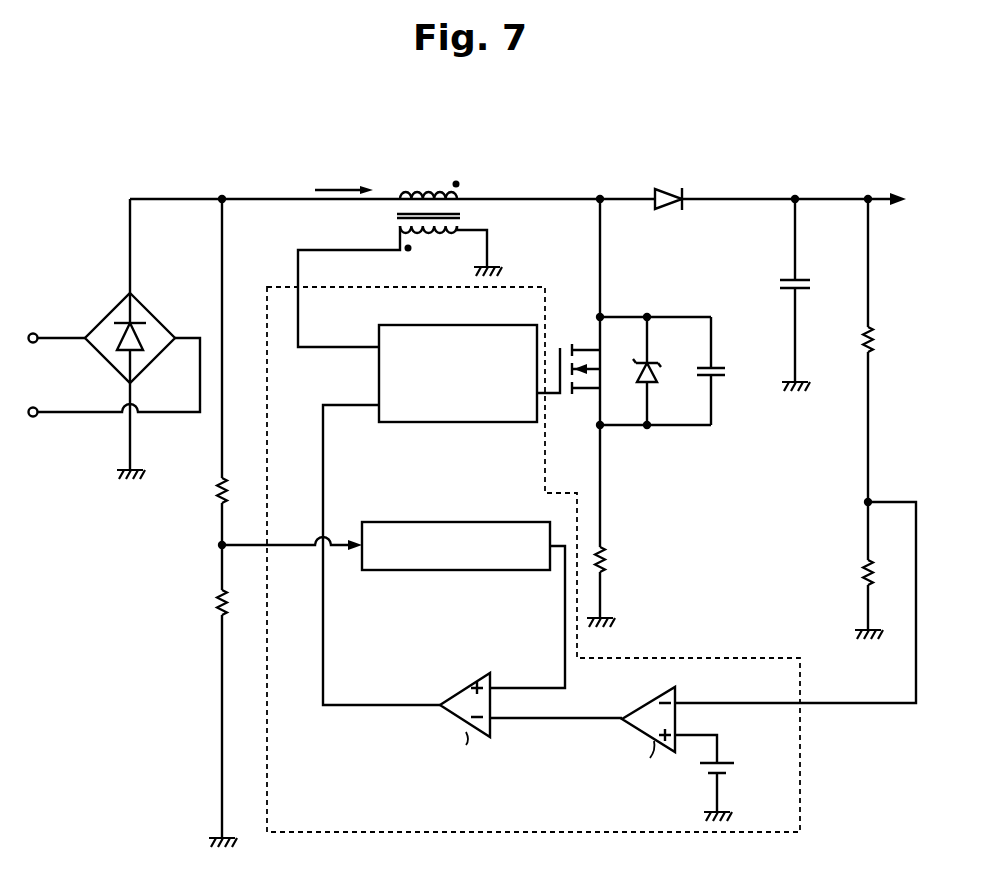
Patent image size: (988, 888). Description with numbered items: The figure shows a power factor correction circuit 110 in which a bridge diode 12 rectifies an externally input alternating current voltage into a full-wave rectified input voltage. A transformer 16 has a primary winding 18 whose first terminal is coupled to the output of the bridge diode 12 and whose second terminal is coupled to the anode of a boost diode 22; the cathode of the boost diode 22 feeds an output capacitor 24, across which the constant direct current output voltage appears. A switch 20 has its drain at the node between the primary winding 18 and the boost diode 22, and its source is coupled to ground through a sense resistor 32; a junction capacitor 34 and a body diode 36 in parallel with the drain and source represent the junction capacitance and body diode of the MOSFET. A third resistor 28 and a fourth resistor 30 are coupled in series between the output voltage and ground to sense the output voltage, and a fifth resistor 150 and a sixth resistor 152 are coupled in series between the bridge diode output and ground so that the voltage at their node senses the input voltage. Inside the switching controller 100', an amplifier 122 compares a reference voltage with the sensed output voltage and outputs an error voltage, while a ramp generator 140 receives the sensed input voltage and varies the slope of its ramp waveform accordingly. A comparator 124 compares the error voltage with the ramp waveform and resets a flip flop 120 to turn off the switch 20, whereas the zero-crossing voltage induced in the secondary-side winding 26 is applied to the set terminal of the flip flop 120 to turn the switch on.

The bridge diode BD 12 is at (118, 308).
The transformer 16 is at (393, 213).
The primary winding L1 18 is at (456, 180).
The switch Qsw 20 is at (561, 347).
The diode D1 22 is at (660, 211).
The capacitor C1 24 is at (778, 284).
The secondary-side winding L2 26 is at (398, 237).
The resistor R3 28 is at (860, 340).
The resistor R4 30 is at (860, 575).
The resistor Rsense 32 is at (606, 568).
The capacitor Coss 34 is at (716, 378).
The diode Db 36 is at (650, 362).
The switching controller 100' is at (533, 559).
The power factor correction circuit 110 is at (804, 118).
The flip flop FF 120 is at (406, 424).
The amplifier Amp1 122 is at (680, 706).
The comparator Amp3 124 is at (468, 690).
The ramp generator 140 is at (460, 521).
The resistor R5 150 is at (216, 490).
The resistor R6 152 is at (216, 600).